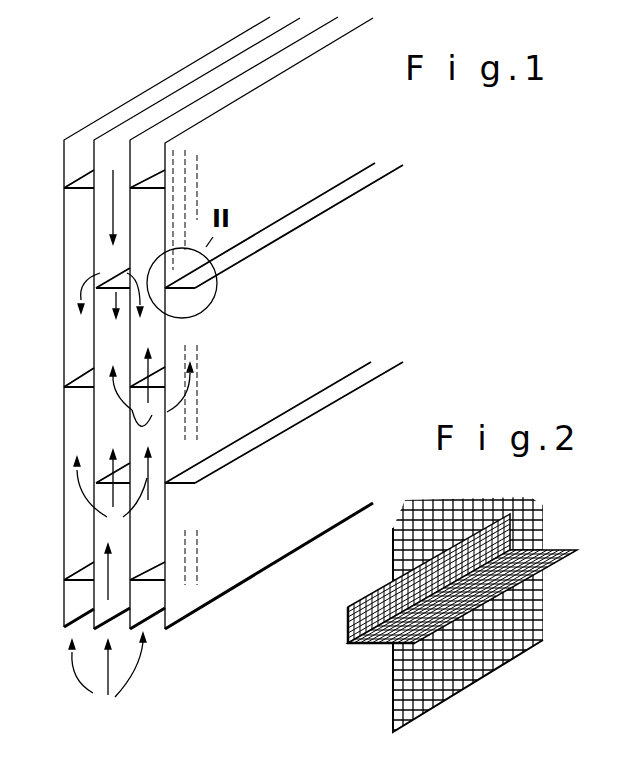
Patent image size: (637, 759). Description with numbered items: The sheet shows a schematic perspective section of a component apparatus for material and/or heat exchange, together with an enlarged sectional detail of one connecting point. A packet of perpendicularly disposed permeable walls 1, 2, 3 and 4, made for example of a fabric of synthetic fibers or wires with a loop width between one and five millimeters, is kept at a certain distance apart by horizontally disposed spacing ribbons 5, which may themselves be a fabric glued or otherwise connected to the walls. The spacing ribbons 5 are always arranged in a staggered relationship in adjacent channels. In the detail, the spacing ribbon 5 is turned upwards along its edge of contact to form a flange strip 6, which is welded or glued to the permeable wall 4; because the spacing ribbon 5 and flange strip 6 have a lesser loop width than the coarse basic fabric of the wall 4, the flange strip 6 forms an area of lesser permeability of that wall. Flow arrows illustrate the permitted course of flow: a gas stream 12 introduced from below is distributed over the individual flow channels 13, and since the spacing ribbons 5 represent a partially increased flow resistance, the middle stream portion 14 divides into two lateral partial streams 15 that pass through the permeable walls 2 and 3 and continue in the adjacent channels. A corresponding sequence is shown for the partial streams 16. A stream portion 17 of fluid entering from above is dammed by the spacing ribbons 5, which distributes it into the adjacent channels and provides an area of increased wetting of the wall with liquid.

In FIG. 1, the permeable wall 1 is at (116, 110).
In FIG. 1, the permeable wall 2 is at (160, 100).
In FIG. 1, the permeable wall 3 is at (198, 100).
In FIG. 1, the permeable wall 4 is at (233, 100).
In FIG. 2, the permeable wall 4 is at (500, 643).
In FIG. 1, the spacing ribbon 5 is at (80, 192).
In FIG. 2, the spacing ribbon 5 is at (445, 602).
In FIG. 2, the flange strip 6 is at (350, 627).
In FIG. 1, the gas stream 12 is at (108, 694).
In FIG. 1, the flow channels 13 is at (80, 622).
In FIG. 1, the middle stream portion 14 is at (100, 567).
In FIG. 1, the lateral partial streams 15 is at (77, 486).
In FIG. 1, the partial streams 16 is at (152, 398).
In FIG. 1, the stream portion 17 is at (108, 170).